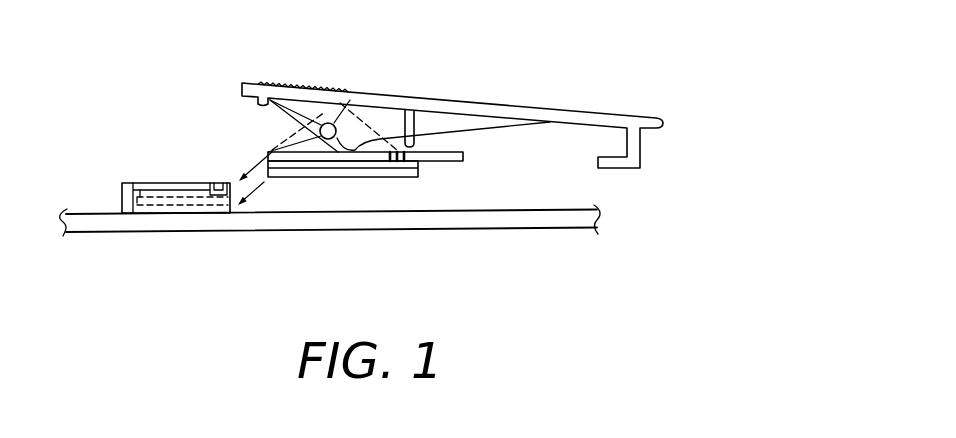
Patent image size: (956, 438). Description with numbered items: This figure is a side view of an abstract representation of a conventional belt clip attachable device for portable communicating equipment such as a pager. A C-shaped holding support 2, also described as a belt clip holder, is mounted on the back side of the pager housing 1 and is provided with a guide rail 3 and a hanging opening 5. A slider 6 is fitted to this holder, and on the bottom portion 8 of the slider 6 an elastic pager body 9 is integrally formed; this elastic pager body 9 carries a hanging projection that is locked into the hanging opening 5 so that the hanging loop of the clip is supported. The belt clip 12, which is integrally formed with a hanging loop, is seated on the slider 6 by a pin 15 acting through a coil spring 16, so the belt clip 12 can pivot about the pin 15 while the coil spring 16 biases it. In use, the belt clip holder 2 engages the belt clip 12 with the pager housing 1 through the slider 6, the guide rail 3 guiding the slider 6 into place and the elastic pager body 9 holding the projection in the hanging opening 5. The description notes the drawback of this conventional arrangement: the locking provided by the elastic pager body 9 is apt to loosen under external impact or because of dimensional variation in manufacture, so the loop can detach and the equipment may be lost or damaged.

The pager housing 1 is at (333, 229).
The C-shaped holding support 2 is at (166, 178).
The guide rail 3 is at (153, 195).
The hanging opening 5 is at (217, 187).
The slider 6 is at (262, 152).
The bottom portion 8 is at (393, 178).
The elastic pager body 9 is at (474, 169).
The belt clip 12 is at (518, 107).
The pin 15 is at (352, 107).
The coil spring 16 is at (301, 110).